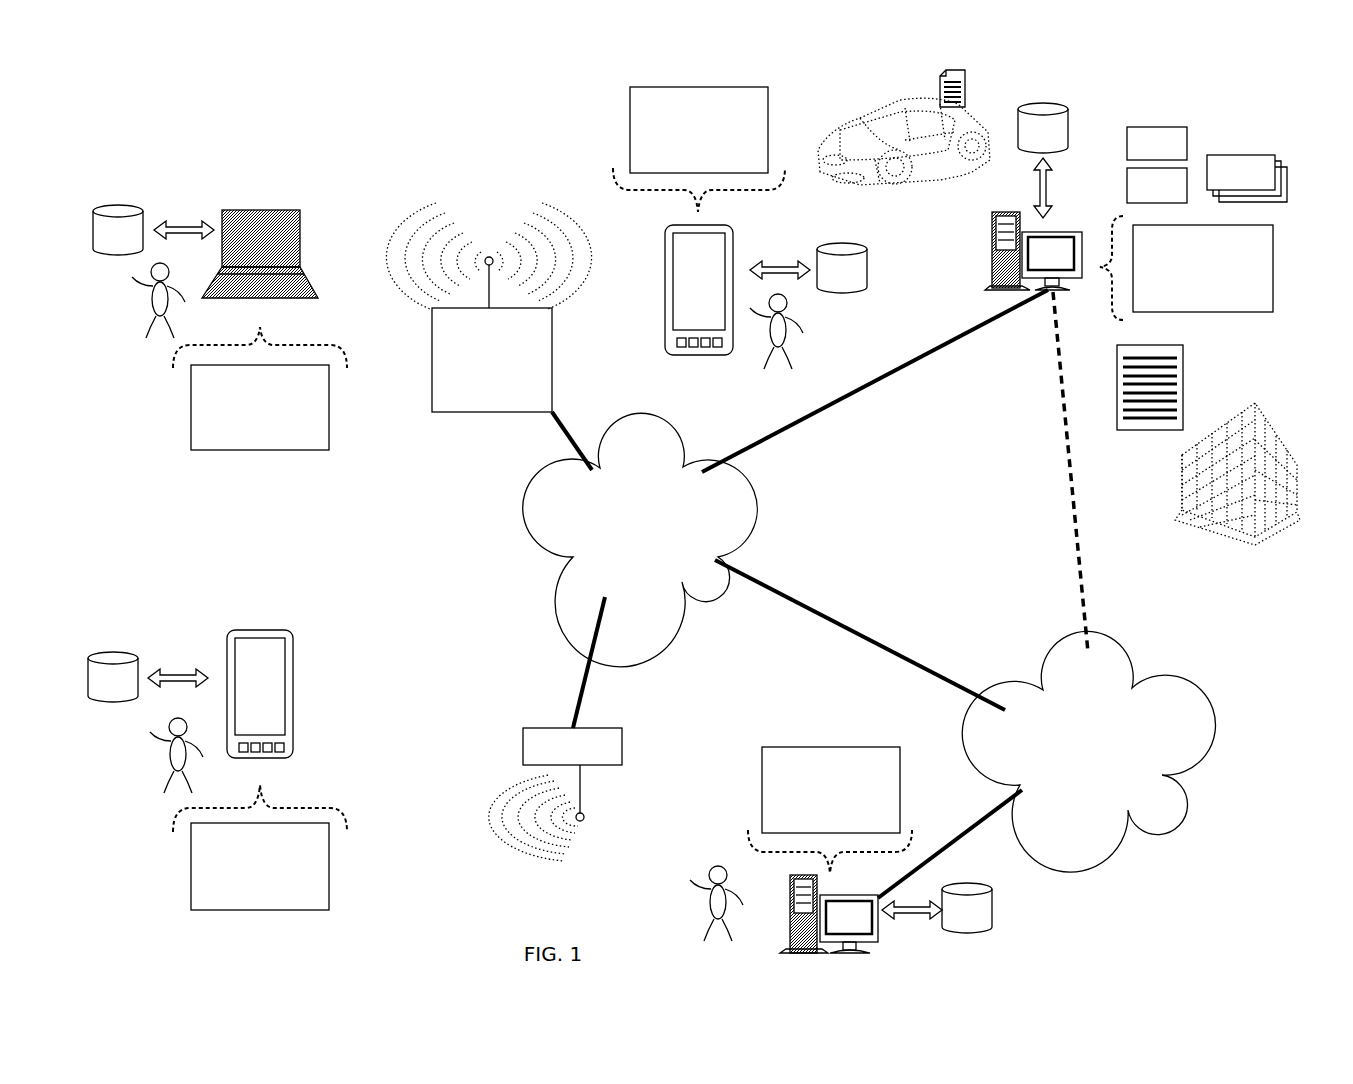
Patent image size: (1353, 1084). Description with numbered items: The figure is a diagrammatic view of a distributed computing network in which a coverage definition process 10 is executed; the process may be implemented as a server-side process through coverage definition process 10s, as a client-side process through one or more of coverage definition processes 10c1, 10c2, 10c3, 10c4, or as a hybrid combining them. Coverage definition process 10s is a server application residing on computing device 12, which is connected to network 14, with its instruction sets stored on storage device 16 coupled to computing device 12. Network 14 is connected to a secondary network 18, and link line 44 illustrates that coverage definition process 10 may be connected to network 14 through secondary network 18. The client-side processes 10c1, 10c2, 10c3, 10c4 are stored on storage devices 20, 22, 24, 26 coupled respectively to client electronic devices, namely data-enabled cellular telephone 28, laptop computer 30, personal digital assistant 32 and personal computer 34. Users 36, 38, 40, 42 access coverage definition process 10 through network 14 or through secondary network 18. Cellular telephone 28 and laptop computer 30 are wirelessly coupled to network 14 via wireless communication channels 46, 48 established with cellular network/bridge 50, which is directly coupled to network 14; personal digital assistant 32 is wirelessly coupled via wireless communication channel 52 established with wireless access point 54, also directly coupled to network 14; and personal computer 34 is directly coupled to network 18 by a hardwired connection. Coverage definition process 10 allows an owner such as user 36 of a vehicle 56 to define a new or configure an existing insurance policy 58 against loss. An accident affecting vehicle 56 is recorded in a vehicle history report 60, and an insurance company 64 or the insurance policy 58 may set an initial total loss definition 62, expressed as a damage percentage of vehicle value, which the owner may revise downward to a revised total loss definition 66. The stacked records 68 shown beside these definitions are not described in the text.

The coverage definition process 10 is at (1241, 72).
The coverage definition process 10c1 is at (630, 140).
The coverage definition process 10c2 is at (331, 390).
The coverage definition process 10c3 is at (331, 850).
The coverage definition process 10c4 is at (905, 806).
The coverage definition process 10s is at (1274, 275).
The computing device 12 is at (992, 230).
The network 14 is at (640, 540).
The storage device 16 is at (1043, 128).
The secondary network 18 is at (1088, 751).
The storage device 20 is at (842, 268).
The storage device 22 is at (118, 230).
The storage device 24 is at (113, 677).
The storage device 26 is at (967, 908).
The data-enabled cellular telephone 28 is at (735, 245).
The laptop computer 30 is at (302, 222).
The personal digital assistant 32 is at (296, 708).
The personal computer 34 is at (790, 912).
The user 36 is at (790, 340).
The user 38 is at (122, 288).
The user 40 is at (157, 735).
The user 42 is at (697, 882).
The link line 44 is at (1075, 550).
The wireless communication channel 46 is at (609, 270).
The wireless communication channel 48 is at (380, 214).
The cellular network/bridge 50 is at (432, 336).
The wireless communication channel 52 is at (413, 730).
The wireless access point 54 is at (622, 746).
The vehicle 56 is at (870, 113).
The insurance policy 58 is at (1117, 363).
The vehicle history report 60 is at (938, 82).
The initial total loss definition 62 is at (1157, 143).
The insurance company 64 is at (1190, 482).
The revised total loss definition 66 is at (1157, 185).
The data records 68 is at (1247, 178).